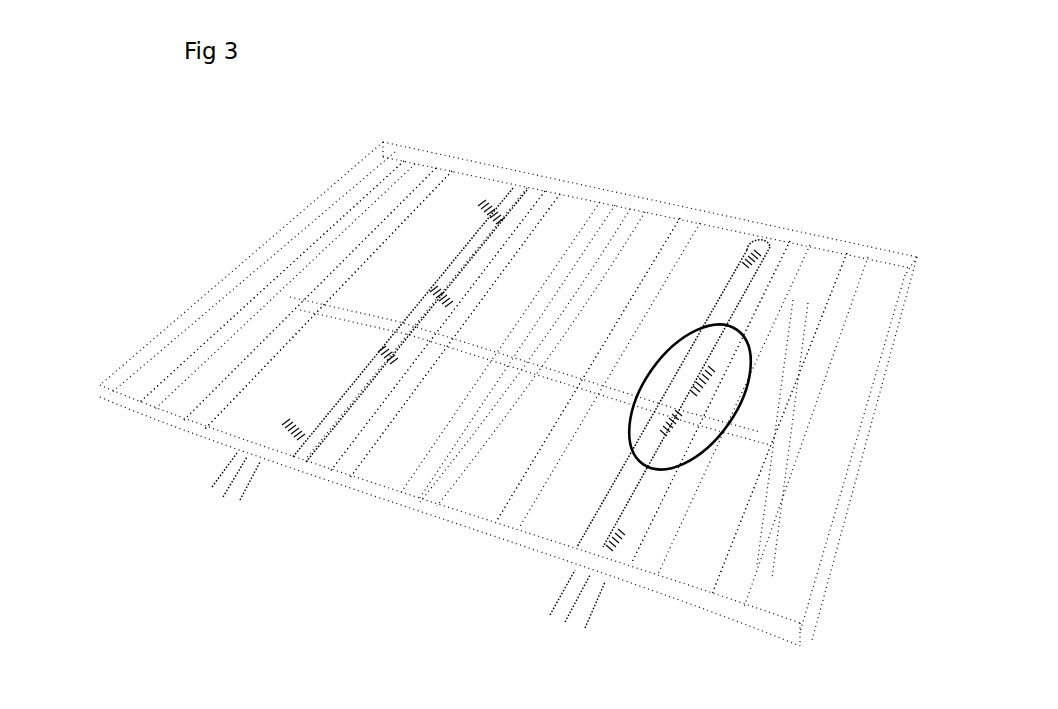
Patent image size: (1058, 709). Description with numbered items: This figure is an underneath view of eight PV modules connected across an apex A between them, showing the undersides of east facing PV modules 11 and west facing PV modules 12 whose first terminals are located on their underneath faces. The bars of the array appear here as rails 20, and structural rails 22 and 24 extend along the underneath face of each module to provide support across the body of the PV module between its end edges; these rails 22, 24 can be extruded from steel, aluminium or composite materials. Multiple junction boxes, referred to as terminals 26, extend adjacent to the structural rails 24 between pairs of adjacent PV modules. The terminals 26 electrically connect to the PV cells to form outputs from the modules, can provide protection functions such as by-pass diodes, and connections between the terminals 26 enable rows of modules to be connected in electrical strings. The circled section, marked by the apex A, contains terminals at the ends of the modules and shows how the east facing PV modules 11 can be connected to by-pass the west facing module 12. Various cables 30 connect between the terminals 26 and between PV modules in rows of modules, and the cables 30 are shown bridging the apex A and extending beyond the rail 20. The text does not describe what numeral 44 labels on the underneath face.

The PV module 11 is at (382, 252).
The PV module 12 is at (215, 385).
The rail 20 is at (673, 207).
The structural rail 22 is at (372, 194).
The structural rail 24 is at (500, 234).
The terminal 26 is at (425, 297).
The cable 30 is at (196, 489).
The transverse line 44 is at (452, 243).
The apex A is at (762, 427).